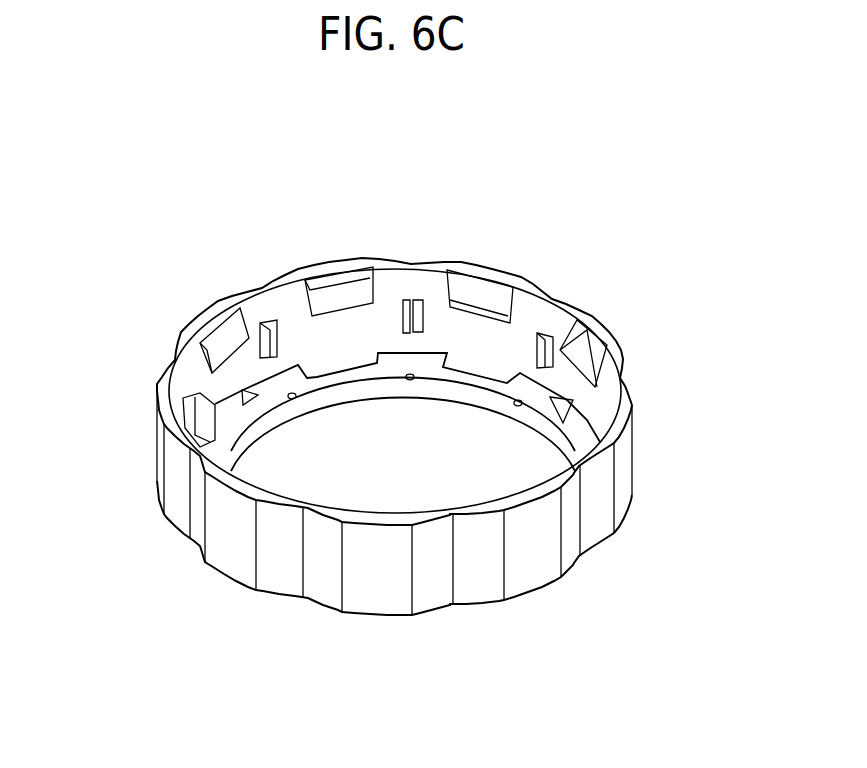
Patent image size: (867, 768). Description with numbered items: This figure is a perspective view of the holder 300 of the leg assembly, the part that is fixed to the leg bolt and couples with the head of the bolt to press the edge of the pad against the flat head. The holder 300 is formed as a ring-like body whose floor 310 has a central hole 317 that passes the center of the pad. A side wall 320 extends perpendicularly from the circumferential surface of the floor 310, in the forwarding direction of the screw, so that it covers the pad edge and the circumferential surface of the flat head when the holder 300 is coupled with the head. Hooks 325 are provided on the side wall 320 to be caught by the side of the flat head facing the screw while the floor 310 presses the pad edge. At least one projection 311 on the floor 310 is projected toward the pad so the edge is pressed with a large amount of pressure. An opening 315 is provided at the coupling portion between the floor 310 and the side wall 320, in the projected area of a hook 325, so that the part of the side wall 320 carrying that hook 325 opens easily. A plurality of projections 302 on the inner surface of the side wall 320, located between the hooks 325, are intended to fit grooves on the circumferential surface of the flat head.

The holder 300 is at (550, 254).
The projection 302 is at (405, 300).
The floor 310 is at (347, 377).
The projection 311 is at (520, 401).
The opening 315 is at (213, 418).
The hole 317 is at (419, 477).
The side wall 320 is at (527, 565).
The hook 325 is at (222, 338).